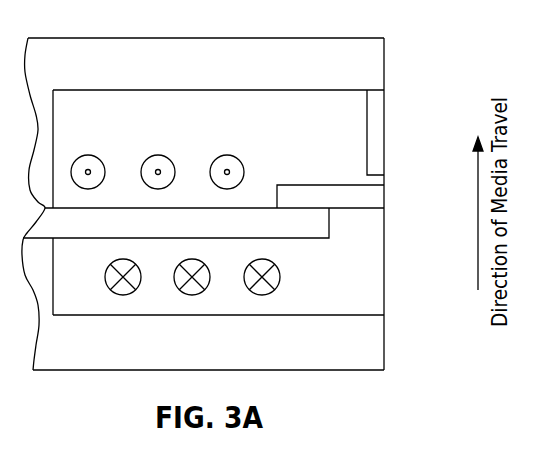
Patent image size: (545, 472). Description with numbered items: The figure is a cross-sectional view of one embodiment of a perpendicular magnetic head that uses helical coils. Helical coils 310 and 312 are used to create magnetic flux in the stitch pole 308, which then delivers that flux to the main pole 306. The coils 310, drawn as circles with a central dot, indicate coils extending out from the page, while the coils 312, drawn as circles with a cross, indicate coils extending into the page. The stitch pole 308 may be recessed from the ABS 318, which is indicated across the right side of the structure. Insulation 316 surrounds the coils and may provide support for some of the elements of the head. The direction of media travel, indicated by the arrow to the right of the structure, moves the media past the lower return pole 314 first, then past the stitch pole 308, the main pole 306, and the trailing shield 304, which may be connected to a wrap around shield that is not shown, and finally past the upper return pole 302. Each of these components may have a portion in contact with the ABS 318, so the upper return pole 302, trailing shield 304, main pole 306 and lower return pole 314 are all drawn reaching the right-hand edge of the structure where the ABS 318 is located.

The upper return pole 302 is at (292, 73).
The trailing shield 304 is at (384, 135).
The main pole 306 is at (384, 192).
The stitch pole 308 is at (237, 232).
The helical coils 310 is at (84, 155).
The helical coils 312 is at (106, 283).
The lower return pole 314 is at (237, 352).
The insulation 316 is at (330, 144).
The ABS 318 is at (386, 57).